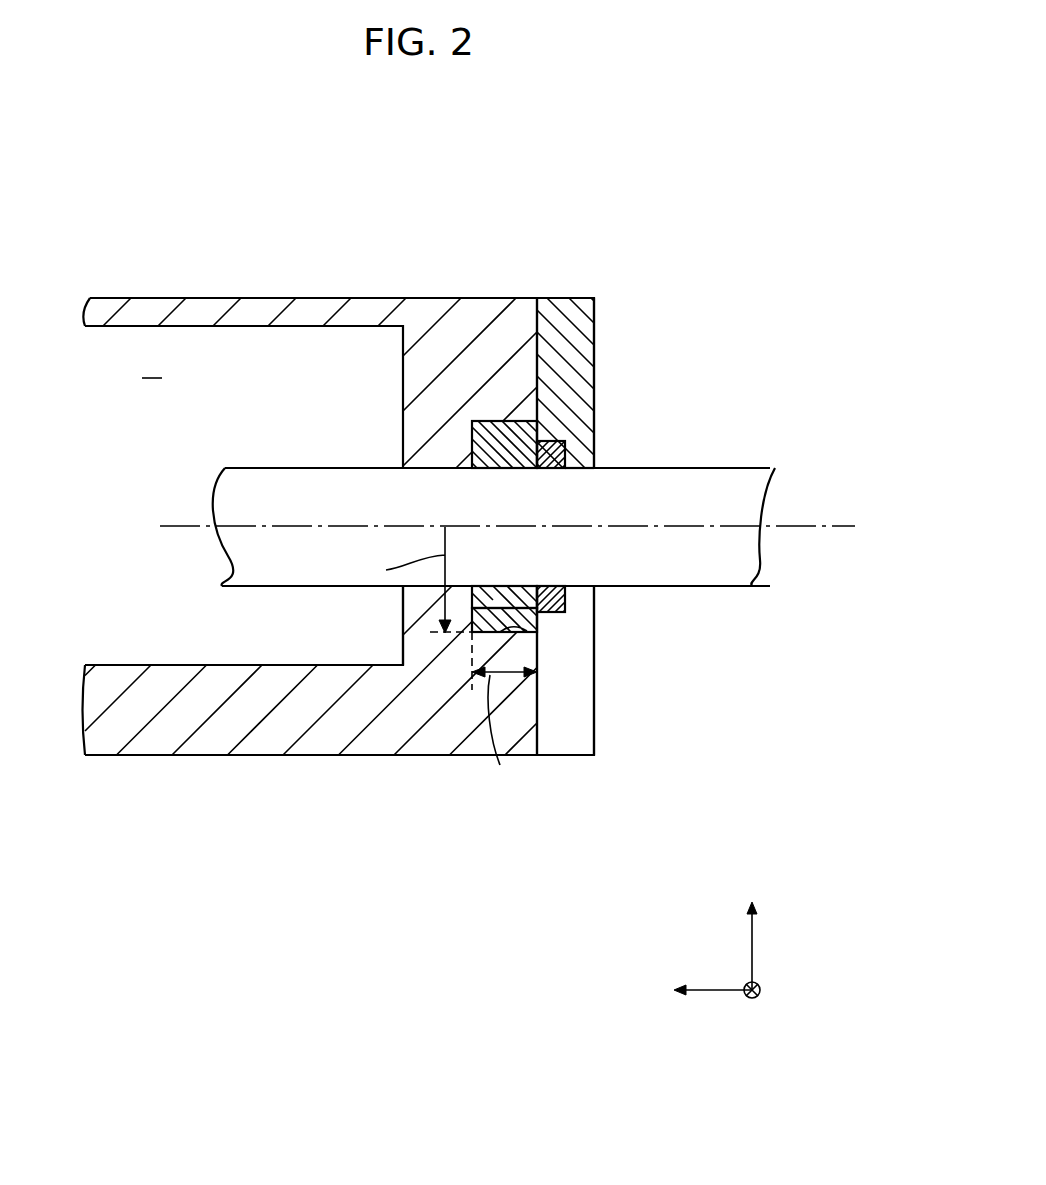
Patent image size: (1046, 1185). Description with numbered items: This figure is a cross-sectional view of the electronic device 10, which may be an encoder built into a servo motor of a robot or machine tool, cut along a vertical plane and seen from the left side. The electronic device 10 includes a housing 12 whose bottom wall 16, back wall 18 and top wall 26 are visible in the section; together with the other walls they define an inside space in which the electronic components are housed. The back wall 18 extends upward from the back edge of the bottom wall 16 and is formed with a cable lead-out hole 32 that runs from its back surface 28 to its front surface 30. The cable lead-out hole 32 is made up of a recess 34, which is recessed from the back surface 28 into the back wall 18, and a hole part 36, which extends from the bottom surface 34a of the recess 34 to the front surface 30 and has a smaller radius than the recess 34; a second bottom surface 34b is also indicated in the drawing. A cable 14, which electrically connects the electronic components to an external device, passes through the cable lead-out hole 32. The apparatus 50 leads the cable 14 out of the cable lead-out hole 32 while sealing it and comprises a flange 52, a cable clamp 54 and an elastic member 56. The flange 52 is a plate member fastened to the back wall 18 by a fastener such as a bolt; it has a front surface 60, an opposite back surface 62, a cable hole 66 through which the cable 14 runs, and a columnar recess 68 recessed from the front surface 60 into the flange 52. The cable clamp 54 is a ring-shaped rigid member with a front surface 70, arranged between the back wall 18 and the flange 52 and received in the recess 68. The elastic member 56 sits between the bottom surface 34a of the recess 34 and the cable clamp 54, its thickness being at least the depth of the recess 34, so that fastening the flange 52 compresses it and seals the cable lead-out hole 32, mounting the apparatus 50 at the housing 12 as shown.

The electronic device 10 is at (740, 139).
The housing 12 is at (272, 297).
The cable 14 is at (752, 586).
The bottom wall 16 is at (218, 740).
The back wall 18 is at (445, 337).
The top wall 26 is at (145, 318).
The back surface 28 is at (550, 315).
The front surface 30 is at (385, 616).
The cable lead-out hole 32 is at (406, 435).
The recess 34 is at (472, 440).
The bottom surface 34a is at (537, 610).
The second seal portion 34b is at (537, 628).
The hole part 36 is at (432, 468).
The apparatus 50 is at (645, 348).
The flange 52 is at (580, 400).
The cable clamp 54 is at (615, 428).
The elastic member 56 is at (580, 378).
The front surface 60 is at (537, 362).
The back surface 62 is at (595, 738).
The cable hole 66 is at (574, 474).
The recess 68 is at (566, 603).
The front surface 70 is at (532, 597).